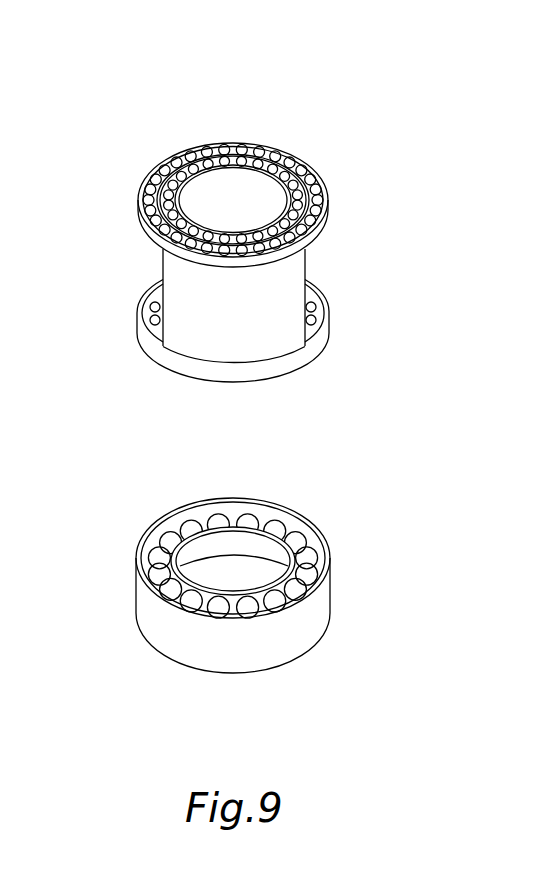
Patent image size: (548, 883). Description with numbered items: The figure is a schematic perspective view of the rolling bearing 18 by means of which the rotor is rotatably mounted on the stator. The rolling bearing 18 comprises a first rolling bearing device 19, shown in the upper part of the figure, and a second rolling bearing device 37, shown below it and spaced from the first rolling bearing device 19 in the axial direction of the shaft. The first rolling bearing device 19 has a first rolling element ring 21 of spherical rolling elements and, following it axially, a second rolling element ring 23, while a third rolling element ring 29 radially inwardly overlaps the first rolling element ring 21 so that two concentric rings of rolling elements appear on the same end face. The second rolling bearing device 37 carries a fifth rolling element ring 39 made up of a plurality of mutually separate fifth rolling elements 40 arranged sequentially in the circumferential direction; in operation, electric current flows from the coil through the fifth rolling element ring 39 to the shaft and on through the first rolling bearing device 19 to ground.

The first rolling bearing device 19 is at (197, 134).
The first rolling element ring 21 is at (260, 138).
The third rolling element ring 29 is at (302, 177).
The second rolling element ring 23 is at (322, 286).
The rolling bearing 18 is at (158, 681).
The second rolling bearing device 37 is at (285, 672).
The fifth rolling elements 40 is at (267, 517).
The fifth rolling element ring 39 is at (300, 523).